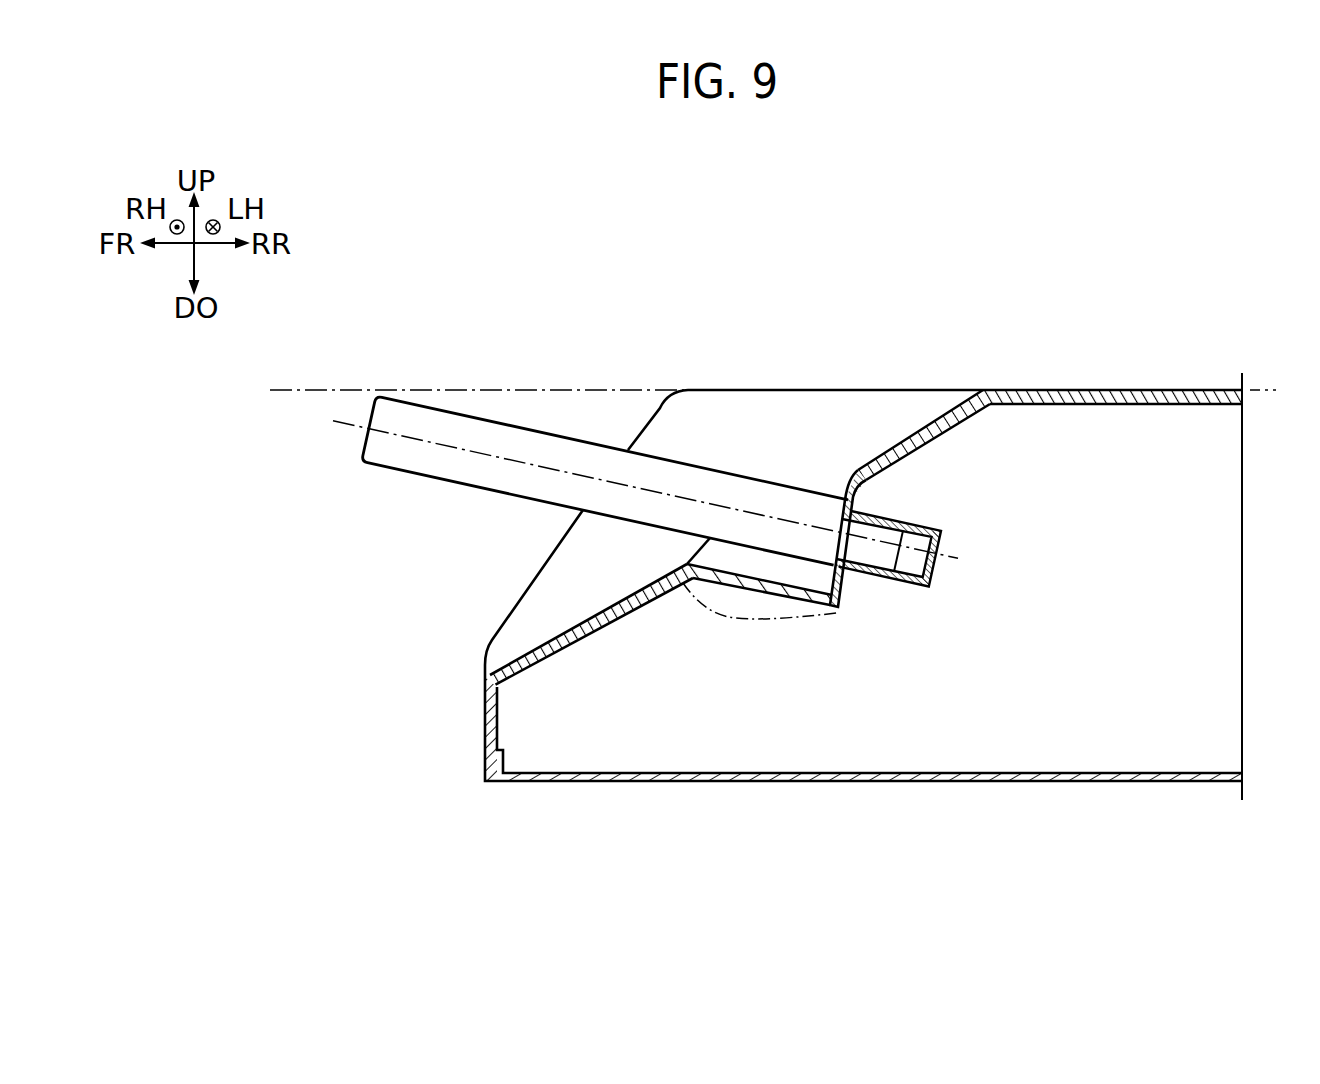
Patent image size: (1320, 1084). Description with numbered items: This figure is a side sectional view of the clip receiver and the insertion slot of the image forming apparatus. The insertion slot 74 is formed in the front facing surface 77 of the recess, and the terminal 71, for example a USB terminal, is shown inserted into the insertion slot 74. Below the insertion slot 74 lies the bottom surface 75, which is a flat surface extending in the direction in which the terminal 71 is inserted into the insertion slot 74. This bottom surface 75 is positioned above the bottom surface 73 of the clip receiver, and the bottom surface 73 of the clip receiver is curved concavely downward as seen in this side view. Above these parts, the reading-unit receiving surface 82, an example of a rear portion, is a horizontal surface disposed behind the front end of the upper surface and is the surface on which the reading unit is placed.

The terminal 71 is at (442, 481).
The bottom surface of the clip receiver 73 is at (800, 617).
The insertion slot 74 is at (863, 526).
The bottom surface 75 is at (812, 577).
The front facing surface 77 is at (848, 474).
The reading-unit receiving surface 82 is at (1083, 389).